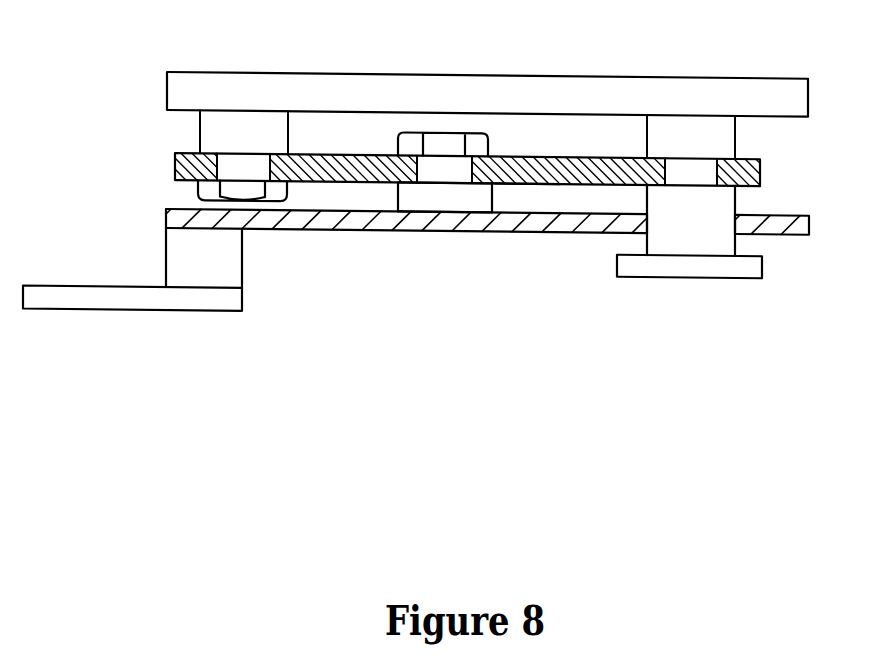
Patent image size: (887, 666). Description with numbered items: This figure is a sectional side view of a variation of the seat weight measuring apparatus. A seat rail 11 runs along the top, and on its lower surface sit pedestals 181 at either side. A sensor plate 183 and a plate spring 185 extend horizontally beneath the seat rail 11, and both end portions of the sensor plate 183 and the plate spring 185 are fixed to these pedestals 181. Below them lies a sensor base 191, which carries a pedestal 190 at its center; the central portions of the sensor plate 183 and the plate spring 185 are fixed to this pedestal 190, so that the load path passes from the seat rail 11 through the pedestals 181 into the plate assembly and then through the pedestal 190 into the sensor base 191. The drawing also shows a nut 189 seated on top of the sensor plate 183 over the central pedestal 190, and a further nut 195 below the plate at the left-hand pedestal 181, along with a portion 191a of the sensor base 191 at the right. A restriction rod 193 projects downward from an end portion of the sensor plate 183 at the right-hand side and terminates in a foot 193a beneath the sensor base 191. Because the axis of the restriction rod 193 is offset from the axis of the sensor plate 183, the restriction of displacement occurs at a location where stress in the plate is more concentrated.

The seat rail 11 is at (392, 85).
The pedestal 181 is at (252, 130).
The sensor plate 183 is at (508, 158).
The plate spring 185 is at (510, 185).
The nut 189 is at (453, 142).
The pedestal 190 is at (480, 195).
The sensor base 191 is at (365, 220).
The lower plate extension 191a is at (742, 212).
The restriction rod 193 is at (708, 240).
The post foot 193a is at (745, 267).
The lower nut 195 is at (277, 190).